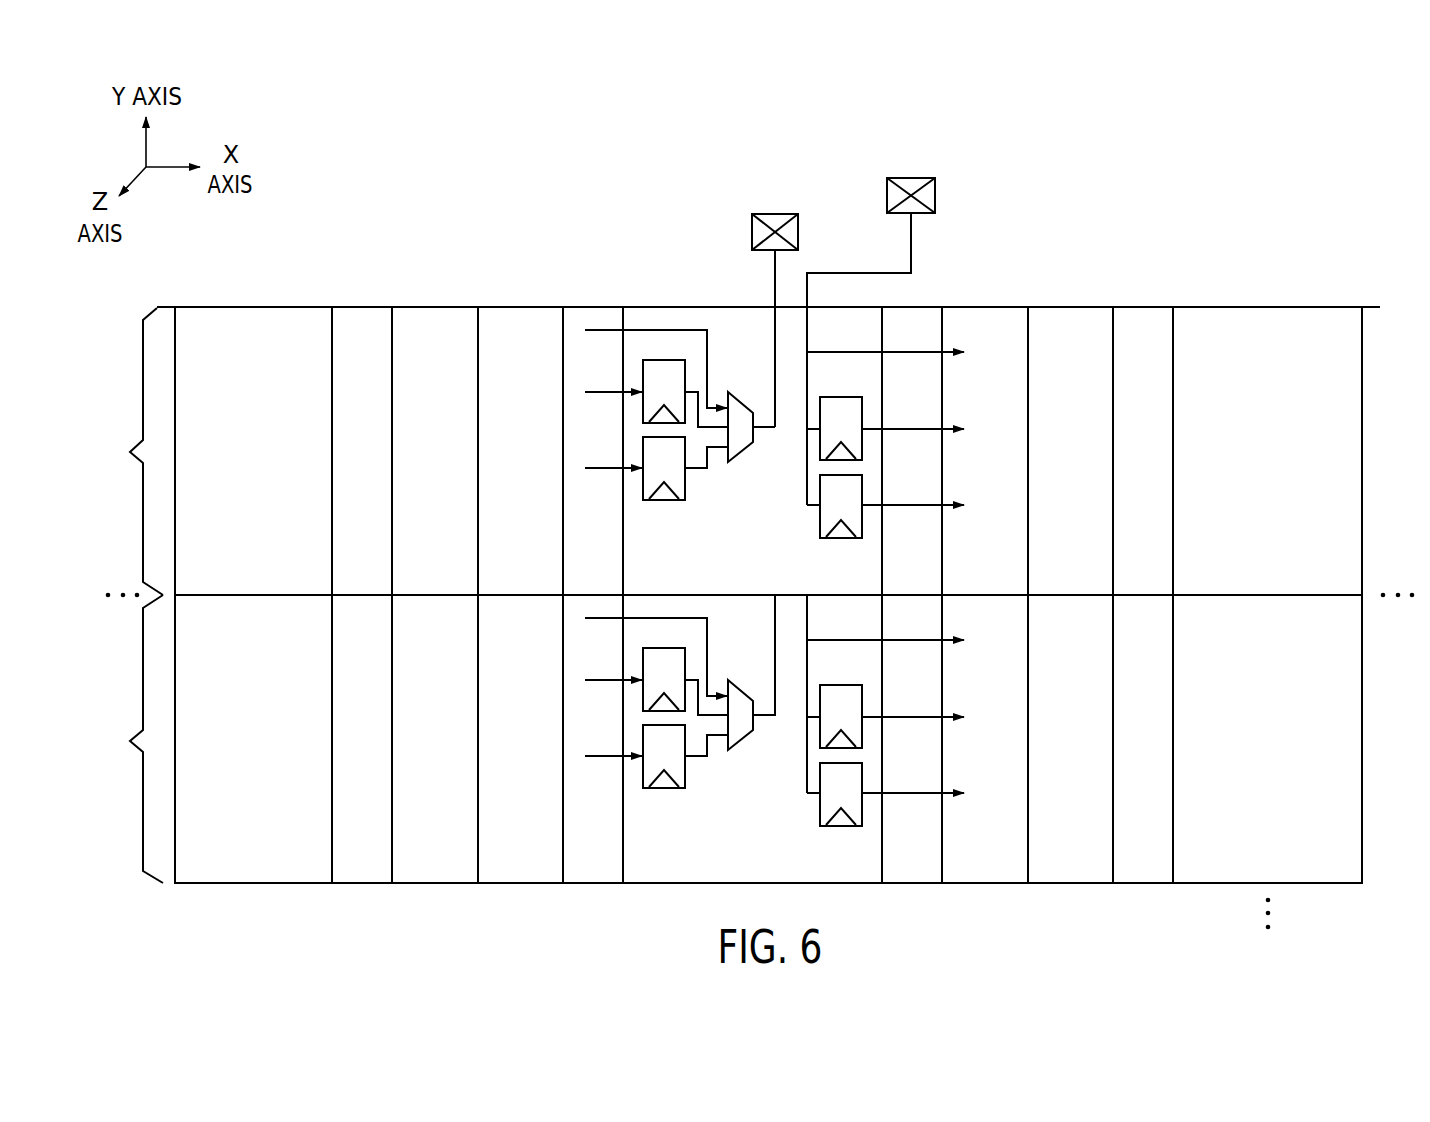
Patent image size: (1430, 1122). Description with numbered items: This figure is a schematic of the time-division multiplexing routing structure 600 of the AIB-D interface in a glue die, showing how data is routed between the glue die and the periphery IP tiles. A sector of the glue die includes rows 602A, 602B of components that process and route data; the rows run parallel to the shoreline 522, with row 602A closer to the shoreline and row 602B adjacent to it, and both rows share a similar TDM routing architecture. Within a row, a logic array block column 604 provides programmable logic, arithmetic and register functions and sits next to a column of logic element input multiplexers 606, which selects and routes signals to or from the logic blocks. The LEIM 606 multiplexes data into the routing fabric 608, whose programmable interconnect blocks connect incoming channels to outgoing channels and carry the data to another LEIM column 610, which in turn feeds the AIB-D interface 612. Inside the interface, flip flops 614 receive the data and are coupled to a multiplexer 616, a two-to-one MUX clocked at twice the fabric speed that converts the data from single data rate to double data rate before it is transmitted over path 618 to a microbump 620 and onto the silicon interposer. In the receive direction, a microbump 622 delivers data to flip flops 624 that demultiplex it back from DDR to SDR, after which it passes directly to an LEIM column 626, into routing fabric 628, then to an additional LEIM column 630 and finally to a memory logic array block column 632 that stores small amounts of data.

The time-division multiplexing routing structure 600 is at (371, 210).
The shoreline 522 is at (785, 246).
The row 602A is at (117, 451).
The row 602B is at (117, 739).
The logic array block column 604 is at (255, 318).
The logic element input multiplexer column 606 is at (362, 320).
The routing fabric 608 is at (436, 318).
The LEIM column 610 is at (594, 320).
The AIB-D interface 612 is at (728, 320).
The flip flops 614 is at (663, 360).
The multiplexer 616 is at (731, 412).
The bypass path 618 is at (687, 328).
The microbump 620 is at (773, 213).
The microbump 622 is at (910, 176).
The flip flops 624 is at (818, 446).
The LEIM column 626 is at (915, 318).
The routing fabric 628 is at (985, 318).
The LEIM column 630 is at (1143, 320).
The memory logic array block (MLAB) 632 is at (1248, 320).